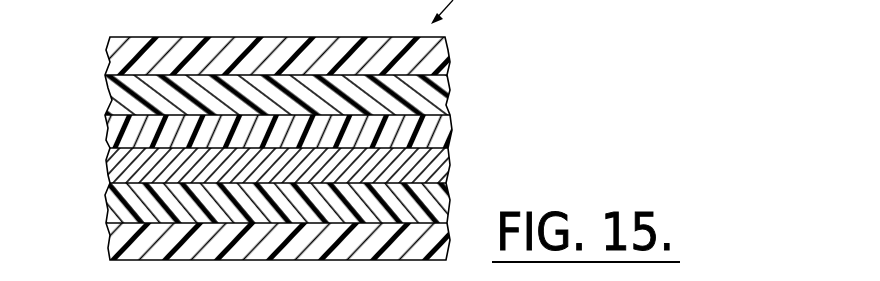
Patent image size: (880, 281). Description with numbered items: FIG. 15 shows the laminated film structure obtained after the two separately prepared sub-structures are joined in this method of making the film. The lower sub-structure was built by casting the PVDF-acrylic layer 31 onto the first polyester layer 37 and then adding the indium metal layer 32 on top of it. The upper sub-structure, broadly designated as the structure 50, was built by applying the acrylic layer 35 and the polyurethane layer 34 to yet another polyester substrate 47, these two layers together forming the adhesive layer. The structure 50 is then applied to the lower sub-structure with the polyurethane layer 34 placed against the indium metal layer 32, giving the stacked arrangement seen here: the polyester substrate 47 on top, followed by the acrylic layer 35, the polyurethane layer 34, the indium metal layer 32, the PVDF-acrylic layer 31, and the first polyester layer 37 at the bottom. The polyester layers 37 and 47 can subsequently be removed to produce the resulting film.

The structure 50 is at (315, 143).
The polyester substrate 47 is at (110, 51).
The acrylic layer 35 is at (110, 97).
The polyurethane layer 34 is at (110, 130).
The indium metal layer 32 is at (110, 166).
The PVDF-acrylic layer 31 is at (110, 204).
The first polyester layer 37 is at (110, 241).